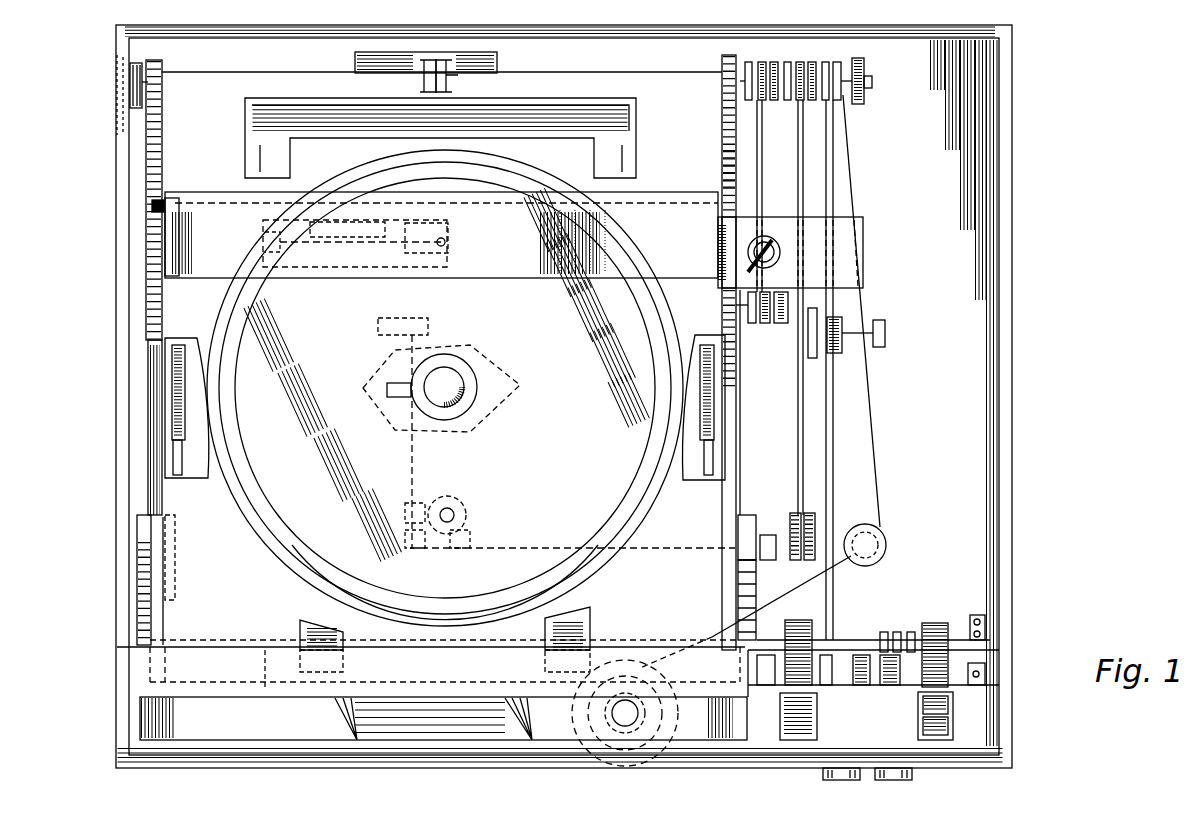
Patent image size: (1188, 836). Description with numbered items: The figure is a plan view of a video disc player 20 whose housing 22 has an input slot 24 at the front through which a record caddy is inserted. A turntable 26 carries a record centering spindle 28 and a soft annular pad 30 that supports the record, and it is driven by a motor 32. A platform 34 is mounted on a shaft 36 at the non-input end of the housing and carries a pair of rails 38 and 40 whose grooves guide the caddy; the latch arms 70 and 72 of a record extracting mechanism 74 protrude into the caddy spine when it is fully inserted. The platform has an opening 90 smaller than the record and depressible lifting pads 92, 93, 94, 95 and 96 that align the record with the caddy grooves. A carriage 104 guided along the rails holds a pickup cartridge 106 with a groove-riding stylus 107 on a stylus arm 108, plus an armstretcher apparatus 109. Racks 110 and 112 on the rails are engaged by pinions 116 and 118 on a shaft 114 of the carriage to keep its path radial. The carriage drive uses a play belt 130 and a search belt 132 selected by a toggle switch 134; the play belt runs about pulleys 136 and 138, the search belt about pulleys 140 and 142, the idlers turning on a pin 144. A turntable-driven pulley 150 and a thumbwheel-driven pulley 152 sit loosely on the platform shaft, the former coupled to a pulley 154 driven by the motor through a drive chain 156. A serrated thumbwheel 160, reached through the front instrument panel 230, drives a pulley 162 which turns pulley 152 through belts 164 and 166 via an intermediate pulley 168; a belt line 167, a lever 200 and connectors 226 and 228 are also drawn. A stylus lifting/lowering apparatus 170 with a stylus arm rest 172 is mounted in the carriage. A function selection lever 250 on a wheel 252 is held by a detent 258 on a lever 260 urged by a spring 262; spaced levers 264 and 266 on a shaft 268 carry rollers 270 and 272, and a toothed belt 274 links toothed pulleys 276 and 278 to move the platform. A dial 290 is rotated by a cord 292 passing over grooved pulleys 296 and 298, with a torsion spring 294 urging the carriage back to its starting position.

The video disc player 20 is at (1115, 205).
The housing 22 is at (1012, 252).
The input slot 24 is at (148, 718).
The turntable 26 is at (300, 583).
The record centering spindle 28 is at (486, 390).
The soft annular pad 30 is at (270, 488).
The motor 32 is at (478, 400).
The platform 34 is at (192, 72).
The shaft 36 is at (135, 82).
The rail 38 is at (165, 608).
The rail 40 is at (738, 614).
The latch arm 70 is at (428, 80).
The latch arm 72 is at (450, 82).
The record extracting mechanism 74 is at (298, 58).
The opening 90 is at (246, 520).
The lifting pad 92 is at (313, 620).
The lifting pad 93 is at (570, 618).
The lifting pad 94 is at (172, 408).
The lifting pad 95 is at (713, 412).
The lifting pad 96 is at (643, 141).
The carriage 104 is at (510, 280).
The pickup cartridge 106 is at (306, 270).
The groove-riding stylus 107 is at (446, 242).
The stylus arm 108 is at (414, 255).
The armstretcher apparatus 109 is at (176, 280).
The rack 110 is at (162, 120).
The rack 112 is at (722, 162).
The shaft 114 is at (594, 216).
The pinion 116 is at (152, 206).
The pinion 118 is at (718, 238).
The play belt 130 is at (757, 118).
The search belt 132 is at (800, 152).
The toggle switch 134 is at (906, 250).
The pulley 136 is at (730, 58).
The pulley 138 is at (758, 326).
The pulley 140 is at (770, 62).
The pulley 142 is at (780, 326).
The pin 144 is at (746, 310).
The turntable-driven pulley 150 is at (806, 62).
The thumbwheel-driven pulley 152 is at (847, 60).
The pulley 154 is at (795, 513).
The drive chain 156 is at (475, 509).
The serrated thumbwheel 160 is at (795, 738).
The pulley 162 is at (843, 650).
The endless belt 164 is at (830, 500).
The endless belt 166 is at (826, 185).
The belt 167 is at (799, 460).
The intermediate pulley 168 is at (838, 356).
The stylus lifting/lowering apparatus 170 is at (352, 238).
The stylus arm rest 172 is at (322, 250).
The lever 200 is at (752, 262).
The connector 226 is at (842, 768).
The connector 228 is at (895, 768).
The front instrument panel 230 is at (125, 757).
The function selection lever 250 is at (953, 702).
The function selection wheel 252 is at (953, 730).
The detent 258 is at (940, 623).
The lever 260 is at (988, 626).
The spring 262 is at (985, 672).
The lever 264 is at (137, 550).
The lever 266 is at (738, 580).
The shaft 268 is at (265, 680).
The platform-engaging roller 270 is at (170, 549).
The platform-engaging roller 272 is at (738, 525).
The endless toothed belt 274 is at (893, 687).
The toothed pulley 276 is at (910, 632).
The toothed pulley 278 is at (866, 687).
The dial 290 is at (573, 715).
The cord 292 is at (873, 442).
The torsion spring 294 is at (647, 713).
The grooved pulley 296 is at (886, 540).
The grooved pulley 298 is at (848, 103).